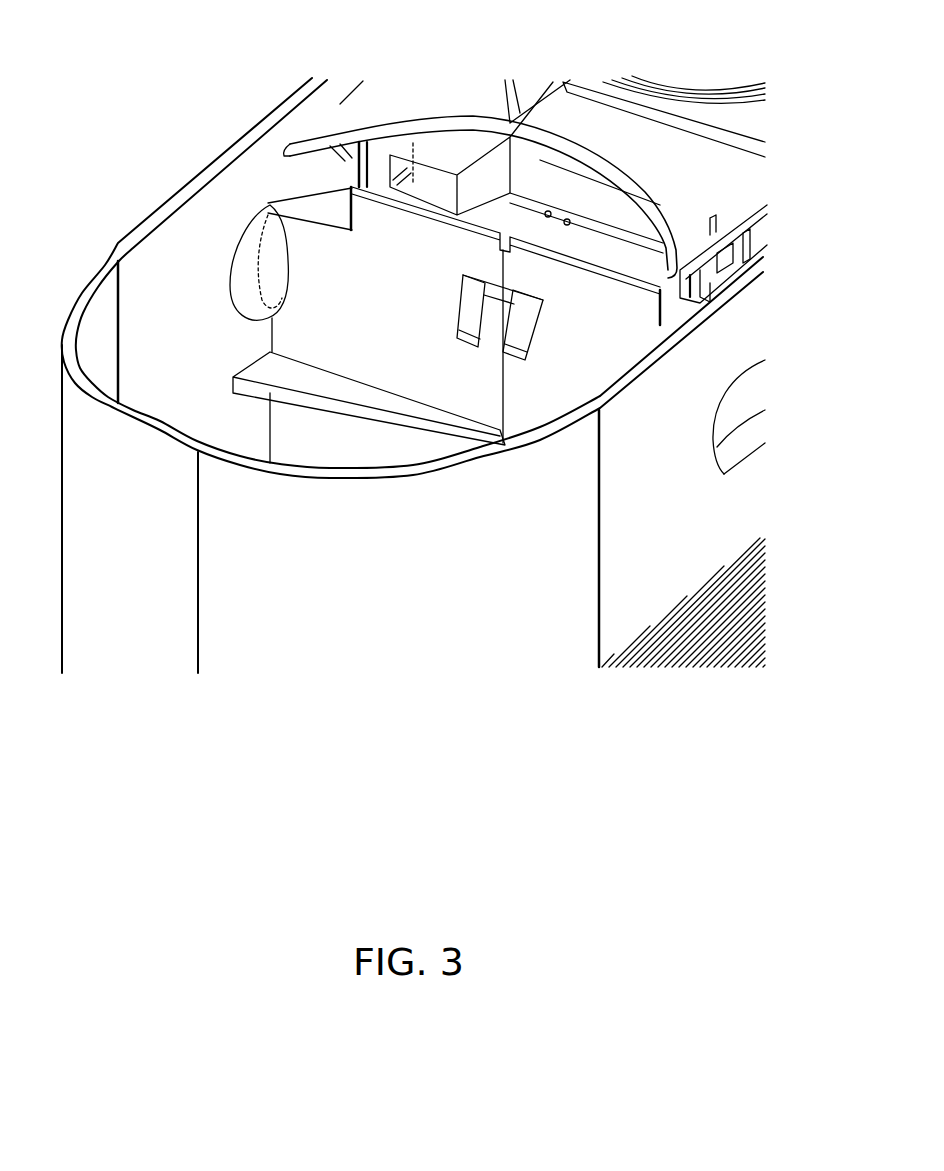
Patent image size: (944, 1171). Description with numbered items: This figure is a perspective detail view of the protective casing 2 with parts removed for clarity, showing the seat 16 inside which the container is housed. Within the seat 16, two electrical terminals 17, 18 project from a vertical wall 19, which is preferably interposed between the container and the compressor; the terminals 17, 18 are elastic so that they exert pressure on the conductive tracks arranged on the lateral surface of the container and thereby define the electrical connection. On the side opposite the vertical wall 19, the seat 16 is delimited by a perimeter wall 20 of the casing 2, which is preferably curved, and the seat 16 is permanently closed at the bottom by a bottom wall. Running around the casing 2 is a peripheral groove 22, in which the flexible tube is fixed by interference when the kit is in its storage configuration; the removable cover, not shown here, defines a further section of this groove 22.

The protective casing 2 is at (642, 502).
The seat 16 is at (158, 248).
The electrical terminal 17 is at (473, 313).
The electrical terminal 18 is at (520, 327).
The vertical wall 19 is at (337, 327).
The perimeter wall 20 is at (365, 596).
The peripheral groove 22 is at (293, 128).